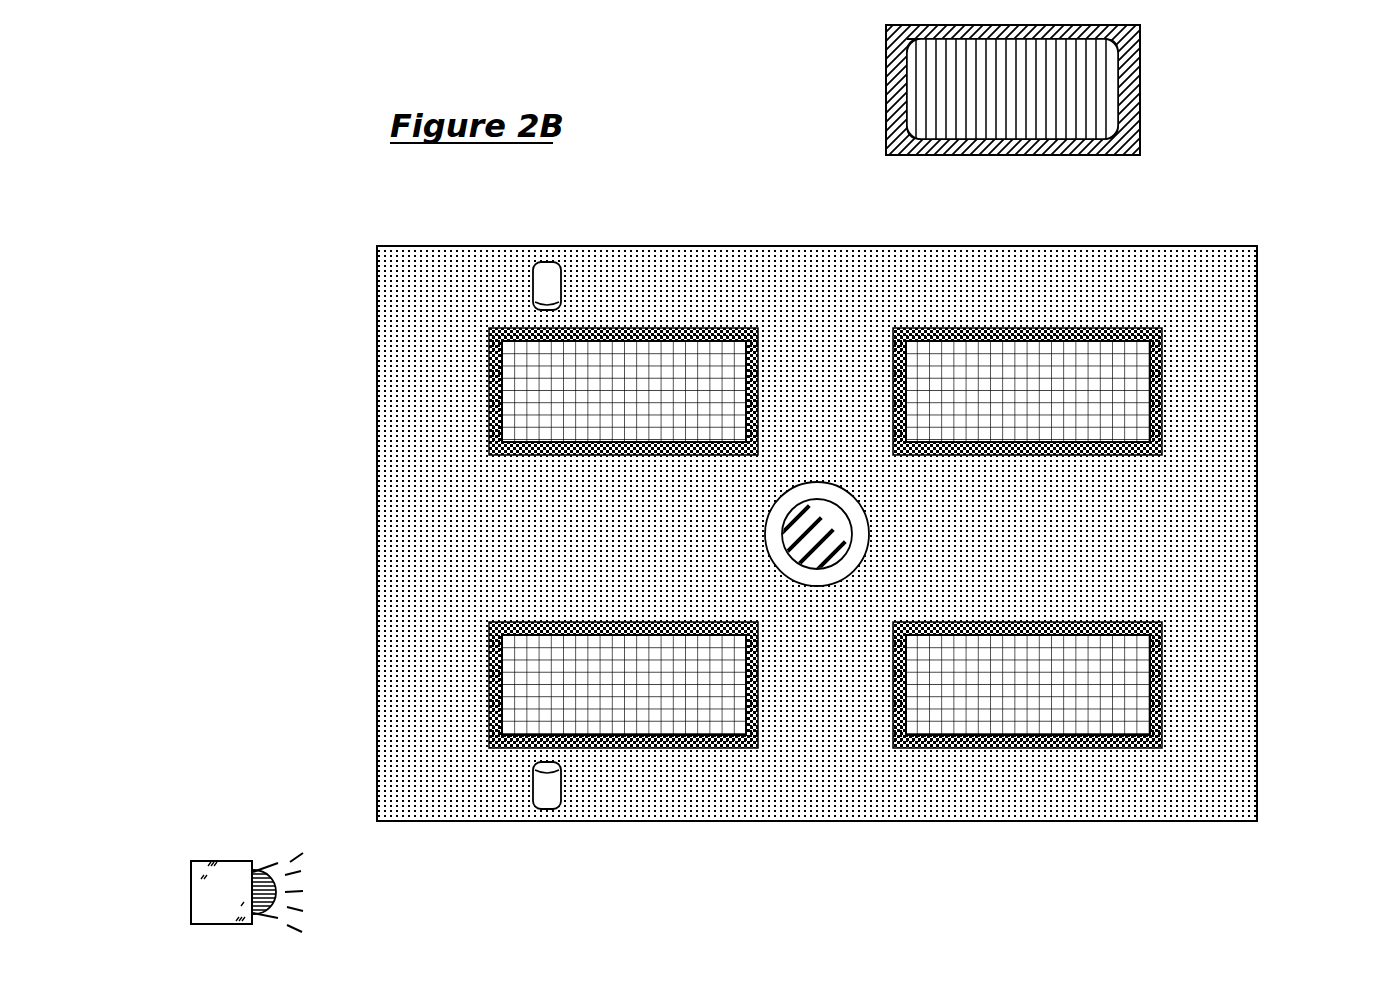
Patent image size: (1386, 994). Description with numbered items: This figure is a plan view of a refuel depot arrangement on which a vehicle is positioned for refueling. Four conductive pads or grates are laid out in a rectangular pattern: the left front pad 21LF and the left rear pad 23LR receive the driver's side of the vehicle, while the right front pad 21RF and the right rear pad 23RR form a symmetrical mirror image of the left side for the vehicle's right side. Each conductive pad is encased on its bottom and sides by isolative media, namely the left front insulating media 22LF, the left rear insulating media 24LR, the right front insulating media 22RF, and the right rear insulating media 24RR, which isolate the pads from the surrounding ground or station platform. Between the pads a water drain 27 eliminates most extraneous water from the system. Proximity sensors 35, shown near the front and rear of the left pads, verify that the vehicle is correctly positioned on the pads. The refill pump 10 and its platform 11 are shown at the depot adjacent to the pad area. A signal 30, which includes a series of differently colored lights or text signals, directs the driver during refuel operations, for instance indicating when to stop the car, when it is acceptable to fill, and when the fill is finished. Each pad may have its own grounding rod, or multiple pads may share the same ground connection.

The refill pump 10 is at (1075, 75).
The platform 11 is at (1140, 130).
The right front conductive pad 21RF is at (626, 390).
The right front insulating media 22RF is at (711, 330).
The right rear conductive pad 23RR is at (1127, 363).
The right rear insulating media 24RR is at (1160, 420).
The left front conductive pad 21LF is at (626, 685).
The left front insulating media 22LF is at (711, 746).
The left rear conductive pad 23LR is at (1028, 682).
The left rear insulating media 24LR is at (1112, 746).
The water drain 27 is at (850, 533).
The proximity sensor 35 is at (533, 283).
The signal 30 is at (222, 892).